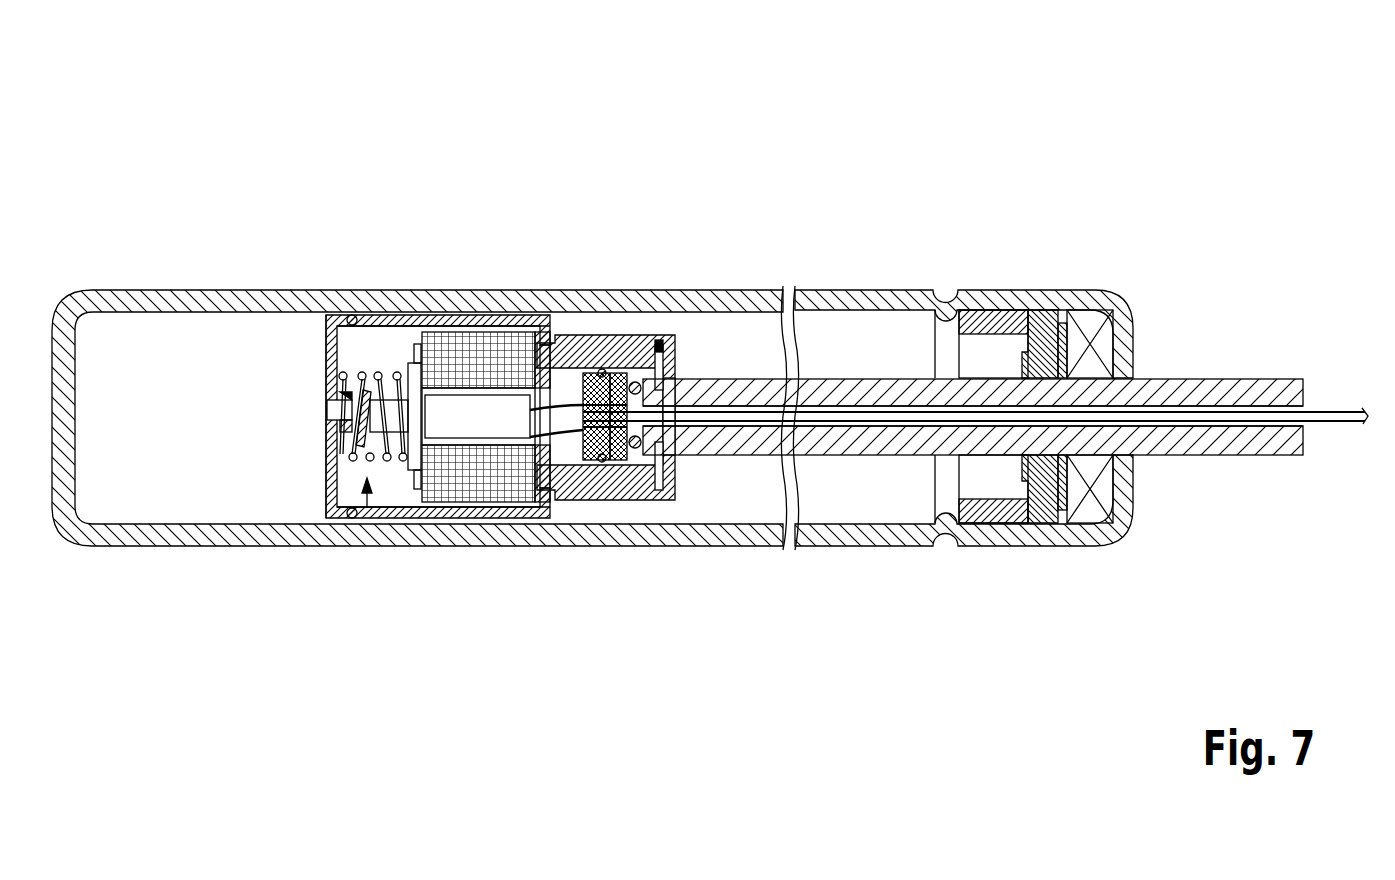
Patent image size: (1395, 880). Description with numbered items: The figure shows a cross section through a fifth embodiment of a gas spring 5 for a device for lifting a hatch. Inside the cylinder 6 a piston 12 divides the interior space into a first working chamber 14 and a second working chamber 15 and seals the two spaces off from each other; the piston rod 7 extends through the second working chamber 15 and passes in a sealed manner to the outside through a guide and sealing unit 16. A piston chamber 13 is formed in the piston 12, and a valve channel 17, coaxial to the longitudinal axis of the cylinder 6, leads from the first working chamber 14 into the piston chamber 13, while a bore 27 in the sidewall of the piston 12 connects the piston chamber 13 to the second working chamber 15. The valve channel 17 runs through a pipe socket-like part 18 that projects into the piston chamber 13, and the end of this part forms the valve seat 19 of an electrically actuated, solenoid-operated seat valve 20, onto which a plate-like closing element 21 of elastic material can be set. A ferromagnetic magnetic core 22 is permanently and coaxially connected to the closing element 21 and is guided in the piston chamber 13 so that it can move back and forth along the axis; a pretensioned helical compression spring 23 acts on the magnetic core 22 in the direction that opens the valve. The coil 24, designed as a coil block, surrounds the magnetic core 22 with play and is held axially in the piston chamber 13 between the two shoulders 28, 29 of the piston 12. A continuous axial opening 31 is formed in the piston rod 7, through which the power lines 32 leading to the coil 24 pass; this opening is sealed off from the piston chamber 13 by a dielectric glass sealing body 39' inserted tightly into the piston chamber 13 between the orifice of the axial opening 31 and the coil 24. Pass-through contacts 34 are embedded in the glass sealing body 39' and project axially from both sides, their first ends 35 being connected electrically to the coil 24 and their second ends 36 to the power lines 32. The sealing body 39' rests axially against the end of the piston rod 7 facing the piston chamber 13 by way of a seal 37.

The actuator device 5 is at (872, 207).
The cylinder 6 is at (163, 300).
The piston rod 7 is at (1257, 395).
The piston 12 is at (450, 325).
The piston chamber 13 is at (365, 322).
The first working chamber 14 is at (158, 492).
The second working chamber 15 is at (868, 492).
The guide and sealing unit 16 is at (1047, 307).
The valve channel 17 is at (335, 415).
The pipe socket-like part 18 is at (333, 400).
The valve seat 19 is at (333, 440).
The seat valve 20 is at (367, 510).
The closing element 21 is at (376, 340).
The magnetic core 22 is at (465, 410).
The spring 23 is at (337, 318).
The coil 24 is at (460, 485).
The bore 27 is at (398, 515).
The shoulder 28 is at (405, 325).
The shoulder 29 is at (550, 492).
The axial opening 31 is at (1178, 410).
The power lines 32 is at (1346, 413).
The pass-through contacts 34 is at (618, 370).
The first ends 35 is at (563, 345).
The second ends 36 is at (640, 380).
The seal 37 is at (660, 345).
The glass sealing body 39' is at (592, 340).